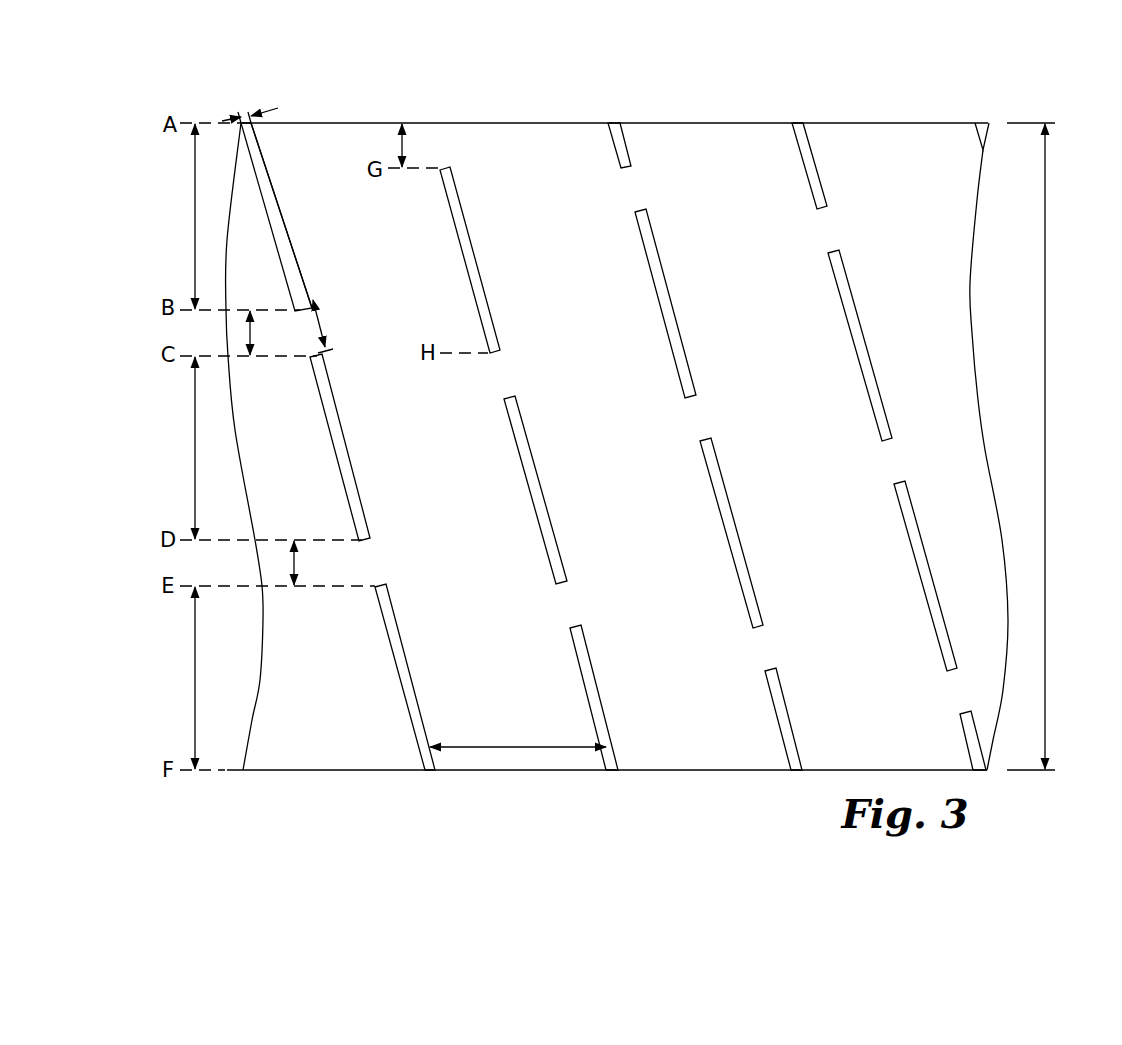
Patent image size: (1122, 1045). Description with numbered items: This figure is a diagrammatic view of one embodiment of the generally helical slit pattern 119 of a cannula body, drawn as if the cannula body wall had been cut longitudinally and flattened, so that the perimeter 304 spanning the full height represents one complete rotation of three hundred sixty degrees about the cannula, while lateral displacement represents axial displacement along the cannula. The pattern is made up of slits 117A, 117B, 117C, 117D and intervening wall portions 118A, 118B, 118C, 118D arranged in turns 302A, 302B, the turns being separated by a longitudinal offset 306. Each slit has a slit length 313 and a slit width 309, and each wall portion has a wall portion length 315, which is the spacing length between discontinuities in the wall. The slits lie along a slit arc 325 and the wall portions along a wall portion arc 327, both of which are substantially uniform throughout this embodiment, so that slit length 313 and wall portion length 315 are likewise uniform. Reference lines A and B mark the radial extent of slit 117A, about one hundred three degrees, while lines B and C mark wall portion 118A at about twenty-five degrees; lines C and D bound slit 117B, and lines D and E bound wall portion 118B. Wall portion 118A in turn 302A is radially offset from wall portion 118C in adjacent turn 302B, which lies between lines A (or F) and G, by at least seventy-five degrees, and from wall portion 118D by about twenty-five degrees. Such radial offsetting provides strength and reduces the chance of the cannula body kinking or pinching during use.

The generally helical slit pattern 119 is at (689, 104).
The perimeter 304 is at (1047, 400).
The slit arc 325 is at (195, 200).
The wall portion arc 327 is at (399, 128).
The slit width 309 is at (226, 123).
The slit length 313 is at (282, 197).
The wall portion length 315 is at (318, 328).
The slit 117A is at (276, 211).
The slit 117B is at (340, 443).
The slit 117C is at (405, 663).
The slit 117D is at (468, 228).
The wall portion 118A is at (300, 323).
The wall portion 118B is at (384, 552).
The wall portion 118C is at (441, 152).
The wall portion 118D is at (506, 375).
The longitudinal offset 306 is at (512, 745).
The turn 302A is at (431, 776).
The turn 302B is at (616, 776).